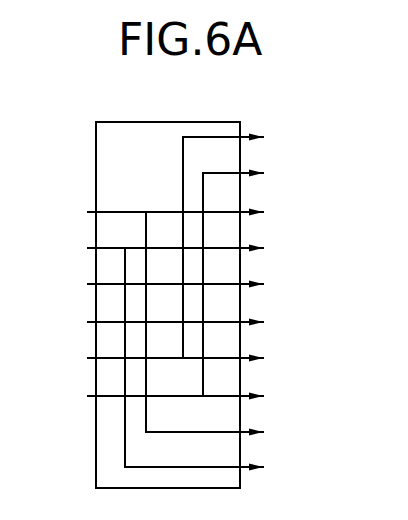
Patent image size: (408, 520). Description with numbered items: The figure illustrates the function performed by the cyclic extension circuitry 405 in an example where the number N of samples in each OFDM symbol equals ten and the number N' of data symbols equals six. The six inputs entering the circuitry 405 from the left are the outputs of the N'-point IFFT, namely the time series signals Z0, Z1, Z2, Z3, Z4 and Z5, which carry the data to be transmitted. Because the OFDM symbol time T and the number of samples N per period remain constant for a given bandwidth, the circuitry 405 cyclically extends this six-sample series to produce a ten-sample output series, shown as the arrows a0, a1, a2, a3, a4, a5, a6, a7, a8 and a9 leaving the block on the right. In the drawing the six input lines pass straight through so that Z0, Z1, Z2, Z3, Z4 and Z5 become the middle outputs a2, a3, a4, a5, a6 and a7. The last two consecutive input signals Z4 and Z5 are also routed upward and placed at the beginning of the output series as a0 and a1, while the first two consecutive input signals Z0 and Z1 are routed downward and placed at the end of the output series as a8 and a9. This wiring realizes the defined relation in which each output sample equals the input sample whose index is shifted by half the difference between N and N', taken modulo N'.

The cyclic extension circuitry 405 is at (158, 121).
The IFFT output signal z0 Z0 is at (137, 217).
The IFFT output signal z1 Z1 is at (137, 253).
The IFFT output signal z2 Z2 is at (137, 289).
The IFFT output signal z3 Z3 is at (137, 327).
The IFFT output signal z4 Z4 is at (137, 363).
The IFFT output signal z5 Z5 is at (137, 401).
The cyclically extended output signal a0 is at (249, 239).
The cyclically extended output signal a1 is at (259, 276).
The cyclically extended output signal a2 is at (278, 215).
The cyclically extended output signal a3 is at (278, 251).
The cyclically extended output signal a4 is at (278, 287).
The cyclically extended output signal a5 is at (278, 325).
The cyclically extended output signal a6 is at (278, 361).
The cyclically extended output signal a7 is at (278, 399).
The cyclically extended output signal a8 is at (231, 334).
The cyclically extended output signal a9 is at (220, 369).